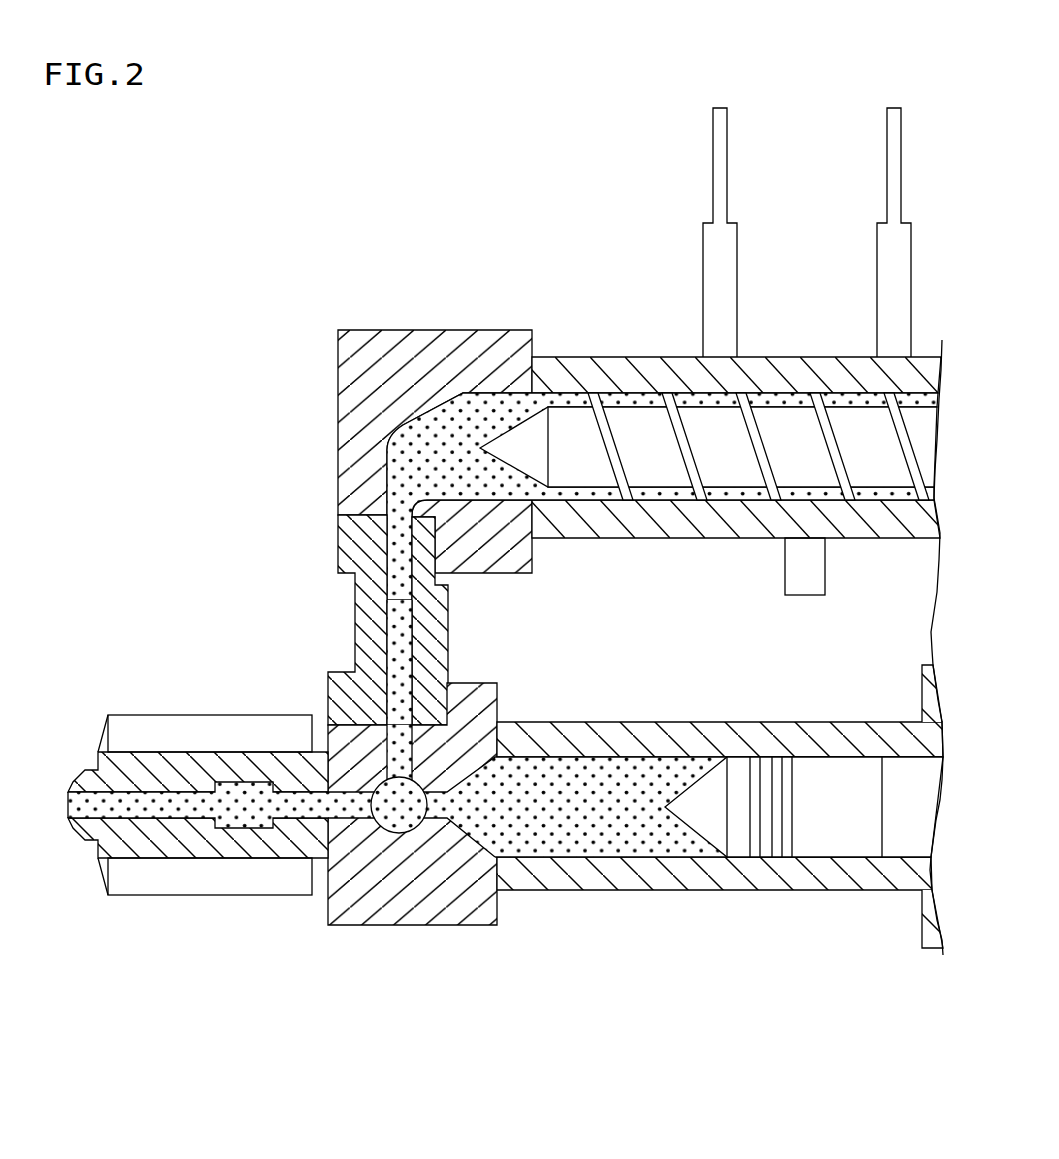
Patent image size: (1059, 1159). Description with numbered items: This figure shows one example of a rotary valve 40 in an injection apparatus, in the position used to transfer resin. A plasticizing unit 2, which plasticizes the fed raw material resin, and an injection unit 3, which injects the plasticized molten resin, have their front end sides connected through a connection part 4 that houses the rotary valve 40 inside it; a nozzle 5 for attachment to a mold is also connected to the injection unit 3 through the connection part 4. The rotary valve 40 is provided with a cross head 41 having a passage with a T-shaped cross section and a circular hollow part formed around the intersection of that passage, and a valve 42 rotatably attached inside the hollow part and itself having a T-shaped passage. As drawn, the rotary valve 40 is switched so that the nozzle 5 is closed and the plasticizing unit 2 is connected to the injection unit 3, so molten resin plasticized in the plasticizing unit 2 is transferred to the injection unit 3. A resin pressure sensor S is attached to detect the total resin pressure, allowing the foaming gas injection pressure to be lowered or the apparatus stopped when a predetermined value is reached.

The plasticizing unit 2 is at (620, 322).
The injection unit 3 is at (631, 905).
The connection part 4 is at (338, 619).
The nozzle 5 is at (155, 878).
The rotary valve 40 is at (425, 881).
The cross head 41 is at (400, 842).
The valve 42 is at (381, 806).
The resin pressure sensor S is at (805, 568).